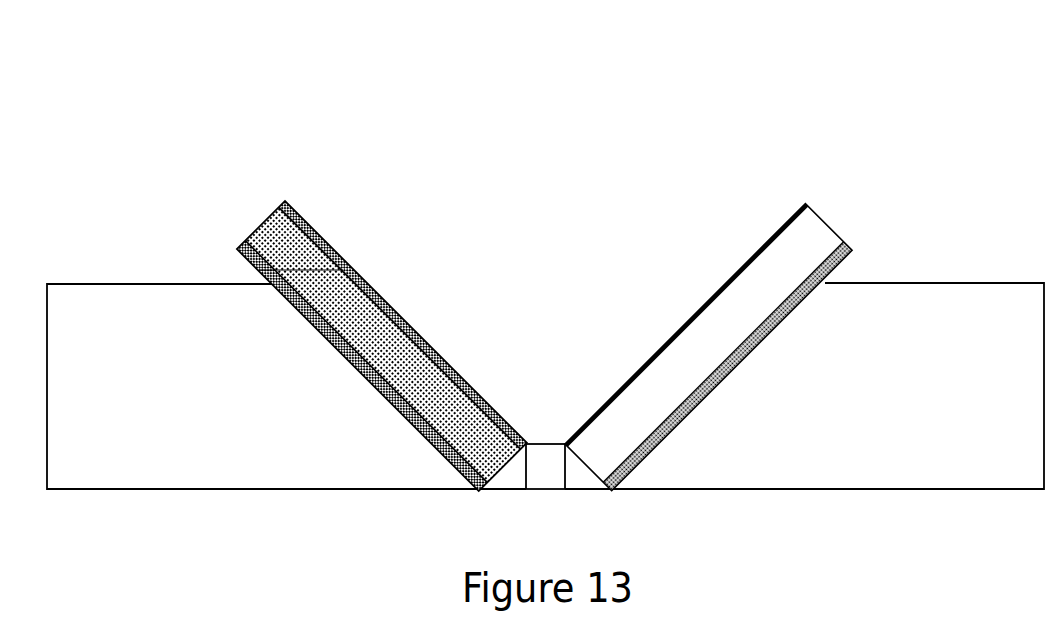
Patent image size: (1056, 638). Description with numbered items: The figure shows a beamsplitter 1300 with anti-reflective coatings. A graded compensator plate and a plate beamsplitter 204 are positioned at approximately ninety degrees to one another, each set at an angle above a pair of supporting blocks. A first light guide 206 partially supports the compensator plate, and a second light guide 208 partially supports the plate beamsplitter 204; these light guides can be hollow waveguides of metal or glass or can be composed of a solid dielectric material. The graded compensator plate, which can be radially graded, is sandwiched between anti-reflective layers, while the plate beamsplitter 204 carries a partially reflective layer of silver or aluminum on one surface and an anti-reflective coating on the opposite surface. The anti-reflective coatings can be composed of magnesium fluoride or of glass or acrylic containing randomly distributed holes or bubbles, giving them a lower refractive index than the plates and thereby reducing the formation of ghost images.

The beamsplitter 1300 is at (933, 97).
The plate beamsplitter 204 is at (842, 190).
The first light guide 206 is at (215, 488).
The second light guide 208 is at (919, 487).